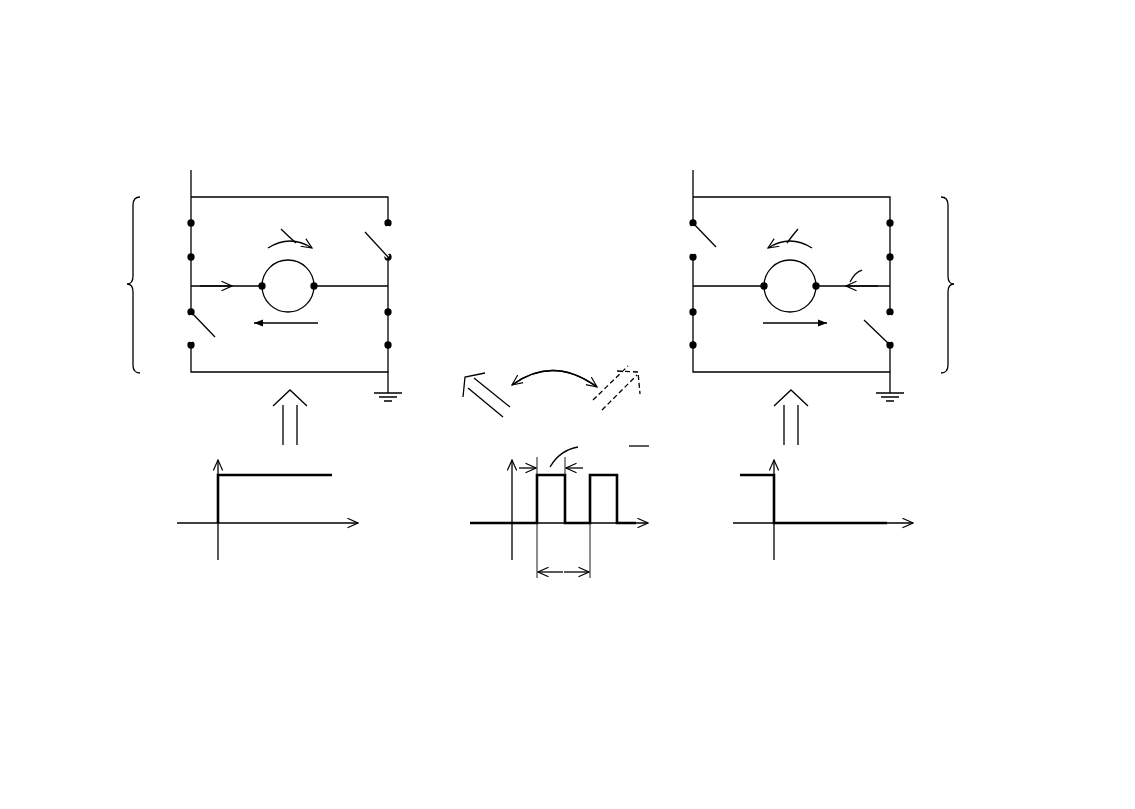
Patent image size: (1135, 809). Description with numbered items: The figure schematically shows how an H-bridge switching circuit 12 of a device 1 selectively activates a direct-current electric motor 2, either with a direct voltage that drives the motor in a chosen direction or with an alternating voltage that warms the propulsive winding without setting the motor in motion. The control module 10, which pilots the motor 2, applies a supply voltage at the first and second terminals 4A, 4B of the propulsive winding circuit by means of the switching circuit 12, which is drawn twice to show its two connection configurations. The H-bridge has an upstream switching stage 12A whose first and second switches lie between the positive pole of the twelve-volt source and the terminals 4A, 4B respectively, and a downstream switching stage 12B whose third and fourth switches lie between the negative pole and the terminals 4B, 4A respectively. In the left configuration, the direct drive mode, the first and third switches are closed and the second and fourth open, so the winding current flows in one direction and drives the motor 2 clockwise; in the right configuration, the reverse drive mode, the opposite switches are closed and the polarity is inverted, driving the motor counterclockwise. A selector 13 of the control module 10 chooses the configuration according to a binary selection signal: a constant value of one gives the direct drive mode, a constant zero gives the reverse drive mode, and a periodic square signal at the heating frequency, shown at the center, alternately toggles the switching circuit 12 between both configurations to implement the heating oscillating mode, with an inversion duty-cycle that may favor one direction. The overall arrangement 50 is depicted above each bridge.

The drive system 50 is at (200, 84).
The device 1 is at (265, 97).
The control module 10 is at (341, 162).
The switching circuit 12 is at (360, 197).
The upstream switching stage 12A is at (538, 285).
The downstream switching stage 12B is at (538, 328).
The selector 13 is at (187, 424).
The direct-current electric motor 2 is at (309, 272).
The first terminal 4A is at (499, 297).
The second terminal 4B is at (577, 297).